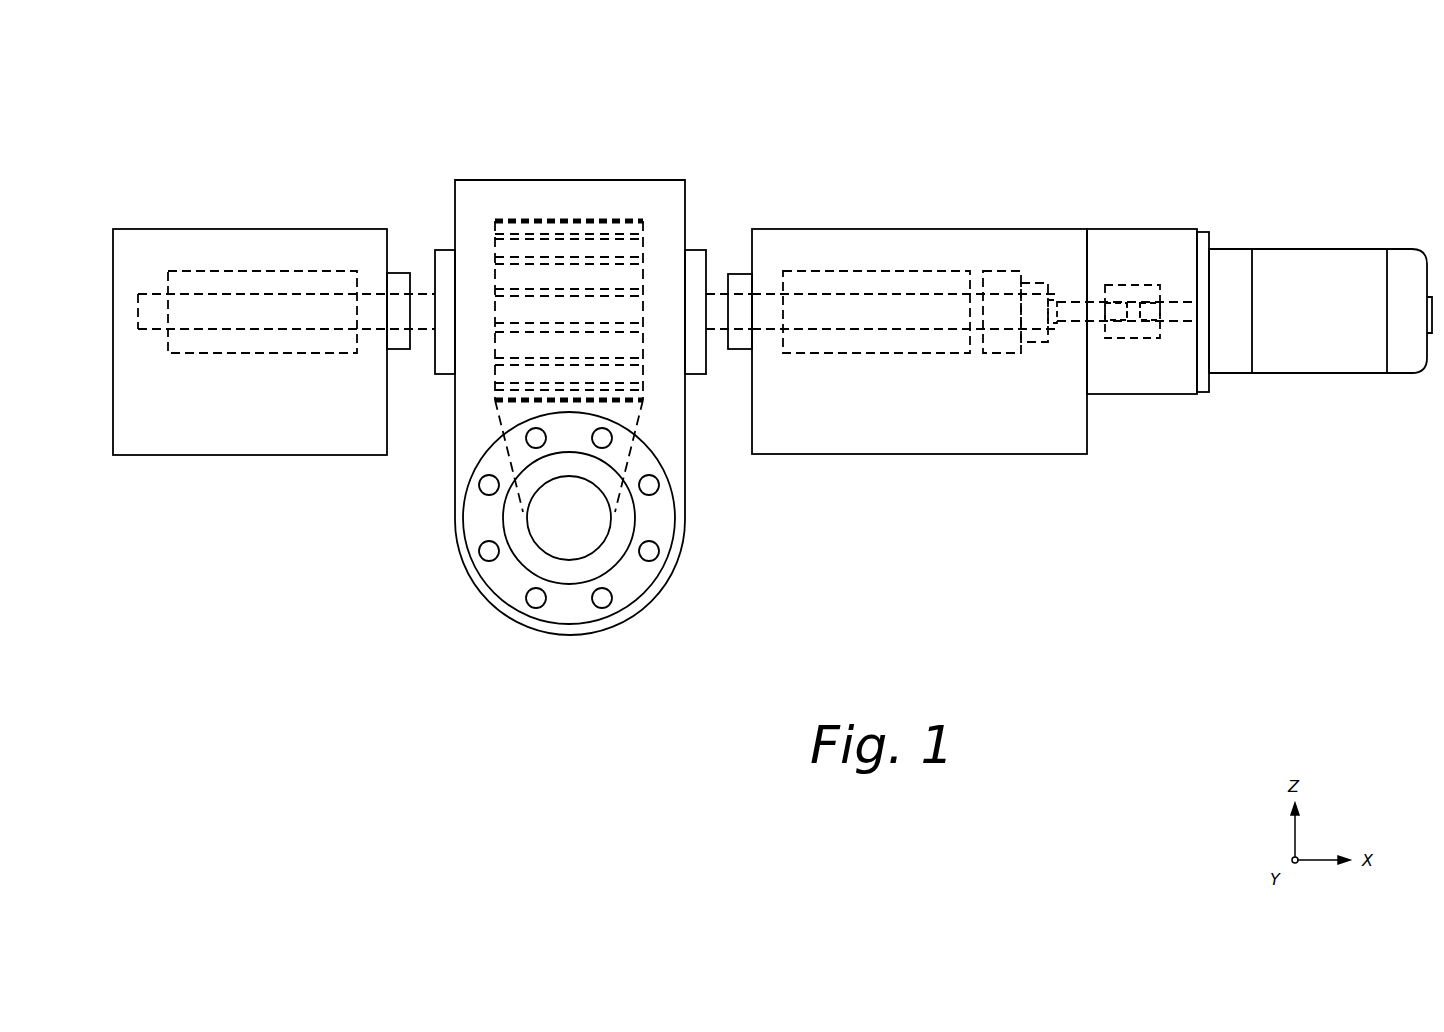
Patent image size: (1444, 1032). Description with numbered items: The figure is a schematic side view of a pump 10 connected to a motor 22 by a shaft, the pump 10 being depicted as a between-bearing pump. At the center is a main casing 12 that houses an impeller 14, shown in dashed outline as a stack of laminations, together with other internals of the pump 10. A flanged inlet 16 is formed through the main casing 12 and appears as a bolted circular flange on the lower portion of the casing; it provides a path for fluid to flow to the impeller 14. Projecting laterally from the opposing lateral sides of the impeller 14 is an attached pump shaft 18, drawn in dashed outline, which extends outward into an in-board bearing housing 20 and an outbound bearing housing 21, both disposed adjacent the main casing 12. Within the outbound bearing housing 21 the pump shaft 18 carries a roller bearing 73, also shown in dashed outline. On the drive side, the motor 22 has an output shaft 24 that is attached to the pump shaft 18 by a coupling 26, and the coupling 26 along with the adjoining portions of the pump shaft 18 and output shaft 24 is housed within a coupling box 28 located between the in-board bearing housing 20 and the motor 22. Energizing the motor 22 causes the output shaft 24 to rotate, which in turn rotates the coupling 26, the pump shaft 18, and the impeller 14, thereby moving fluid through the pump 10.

The pump 10 is at (176, 84).
The main casing 12 is at (455, 200).
The impeller 14 is at (590, 222).
The flanged inlet 16 is at (475, 523).
The pump shaft 18 is at (882, 330).
The in-board bearing housing 20 is at (921, 229).
The outbound bearing housing 21 is at (247, 229).
The motor 22 is at (1315, 249).
The output shaft 24 is at (1177, 302).
The coupling 26 is at (1122, 340).
The coupling box 28 is at (1138, 229).
The bearing 73 is at (248, 354).